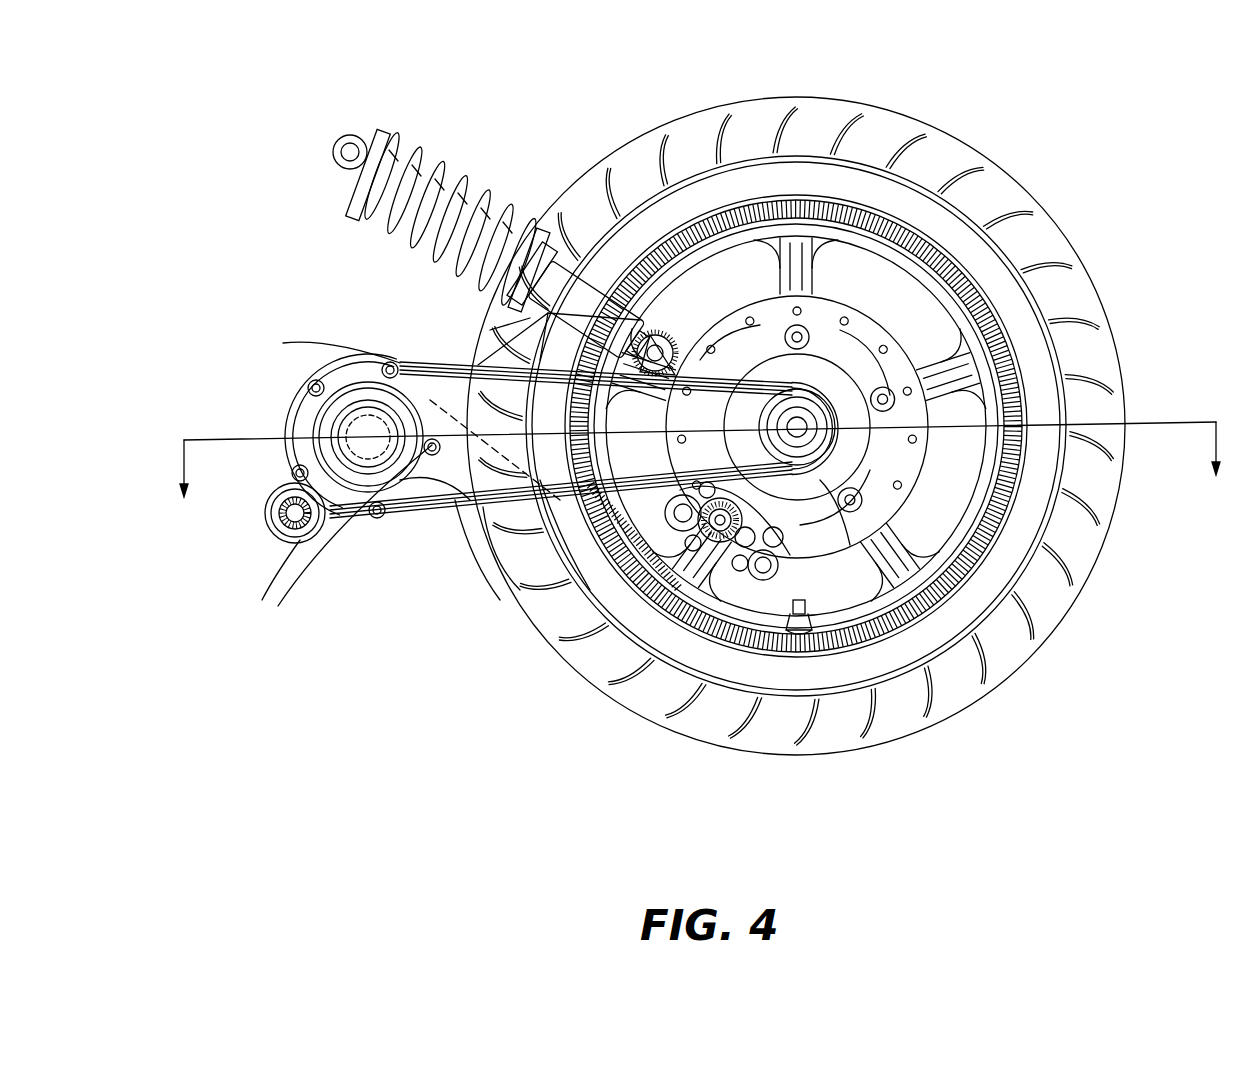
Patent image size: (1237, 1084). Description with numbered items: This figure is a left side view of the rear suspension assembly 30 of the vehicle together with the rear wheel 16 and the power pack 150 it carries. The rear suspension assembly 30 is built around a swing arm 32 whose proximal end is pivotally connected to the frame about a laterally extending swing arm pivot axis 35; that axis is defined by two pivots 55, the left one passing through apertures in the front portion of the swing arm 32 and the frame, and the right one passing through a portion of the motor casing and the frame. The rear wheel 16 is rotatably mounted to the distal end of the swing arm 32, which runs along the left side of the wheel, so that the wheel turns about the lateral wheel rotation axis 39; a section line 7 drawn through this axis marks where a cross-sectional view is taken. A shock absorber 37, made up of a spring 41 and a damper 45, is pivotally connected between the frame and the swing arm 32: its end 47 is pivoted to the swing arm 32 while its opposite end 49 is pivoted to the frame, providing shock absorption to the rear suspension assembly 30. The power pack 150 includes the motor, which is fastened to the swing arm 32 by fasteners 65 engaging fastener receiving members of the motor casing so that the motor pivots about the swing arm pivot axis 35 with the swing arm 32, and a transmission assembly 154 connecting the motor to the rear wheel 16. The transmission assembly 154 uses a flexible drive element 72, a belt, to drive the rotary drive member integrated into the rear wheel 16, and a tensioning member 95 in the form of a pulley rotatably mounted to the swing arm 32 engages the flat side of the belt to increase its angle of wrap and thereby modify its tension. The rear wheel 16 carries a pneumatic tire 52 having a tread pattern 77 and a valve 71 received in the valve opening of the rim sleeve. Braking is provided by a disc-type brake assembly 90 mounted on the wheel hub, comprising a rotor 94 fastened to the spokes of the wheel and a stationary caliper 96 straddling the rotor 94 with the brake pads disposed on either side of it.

The section line 7- 7 is at (701, 474).
The rear wheel 16 is at (1000, 273).
The rear suspension assembly 30 is at (433, 507).
The swing arm 32 is at (452, 510).
The swing arm pivot axis 35 is at (288, 525).
The shock absorber 37 is at (512, 198).
The wheel rotation axis 39 is at (805, 440).
The spring 41 is at (425, 150).
The damper 45 is at (537, 292).
The end of the shock absorber 47 is at (673, 393).
The opposite end of the shock absorber 49 is at (343, 136).
The tire 52 is at (950, 140).
The pivots 55 is at (337, 539).
The fasteners 65 is at (310, 384).
The valve 71 is at (800, 640).
The flexible drive element 72 is at (618, 268).
The tread pattern 77 is at (992, 680).
The brake assembly 90 is at (832, 313).
The rotor 94 is at (848, 545).
The tensioning member 95 is at (400, 480).
The caliper 96 is at (775, 578).
The power pack 150 is at (408, 343).
The transmission assembly 154 is at (440, 525).